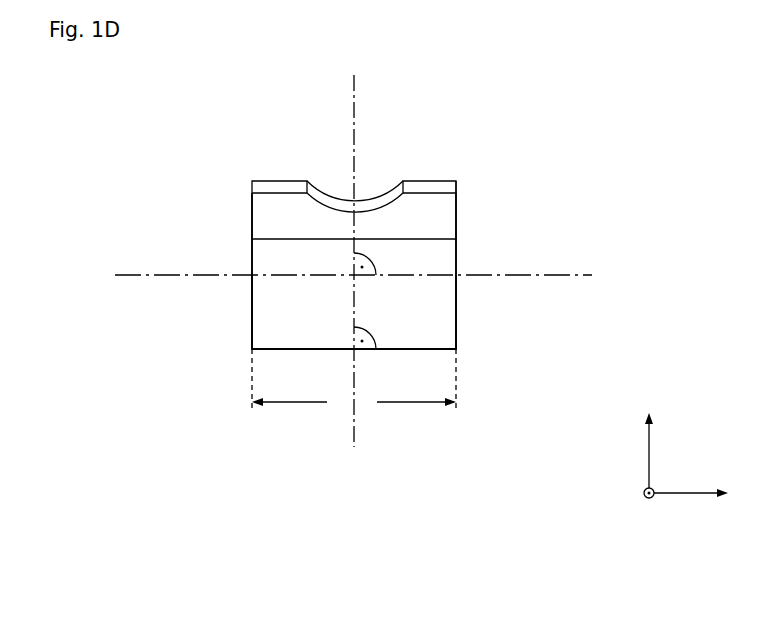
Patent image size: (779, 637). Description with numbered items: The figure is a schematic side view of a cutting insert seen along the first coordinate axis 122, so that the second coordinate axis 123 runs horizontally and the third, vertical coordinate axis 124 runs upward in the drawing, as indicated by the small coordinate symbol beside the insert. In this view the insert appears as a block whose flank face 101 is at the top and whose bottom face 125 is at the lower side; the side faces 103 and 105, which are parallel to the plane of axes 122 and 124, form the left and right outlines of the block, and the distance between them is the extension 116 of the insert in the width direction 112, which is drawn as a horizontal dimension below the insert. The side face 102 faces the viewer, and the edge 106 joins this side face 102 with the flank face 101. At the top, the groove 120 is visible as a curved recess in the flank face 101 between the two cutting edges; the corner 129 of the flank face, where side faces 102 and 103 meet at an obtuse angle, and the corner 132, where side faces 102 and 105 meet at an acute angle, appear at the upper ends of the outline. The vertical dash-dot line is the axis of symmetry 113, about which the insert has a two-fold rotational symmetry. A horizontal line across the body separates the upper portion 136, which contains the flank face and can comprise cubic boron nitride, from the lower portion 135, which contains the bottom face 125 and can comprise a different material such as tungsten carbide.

The flank face 101 is at (392, 160).
The side face 102 is at (440, 327).
The side face 103 is at (476, 302).
The side face 105 is at (224, 252).
The edge 106 is at (430, 181).
The width direction 112 is at (568, 275).
The axis of symmetry 113 is at (355, 80).
The extension in the width direction 116 is at (354, 383).
The groove 120 is at (323, 205).
The first coordinate axis 122 is at (643, 493).
The second coordinate axis 123 is at (683, 496).
The third coordinate axis 124 is at (648, 451).
The bottom face 125 is at (273, 350).
The corner 129 is at (461, 190).
The corner 132 is at (252, 192).
The lower portion 135 is at (258, 310).
The upper portion 136 is at (257, 212).